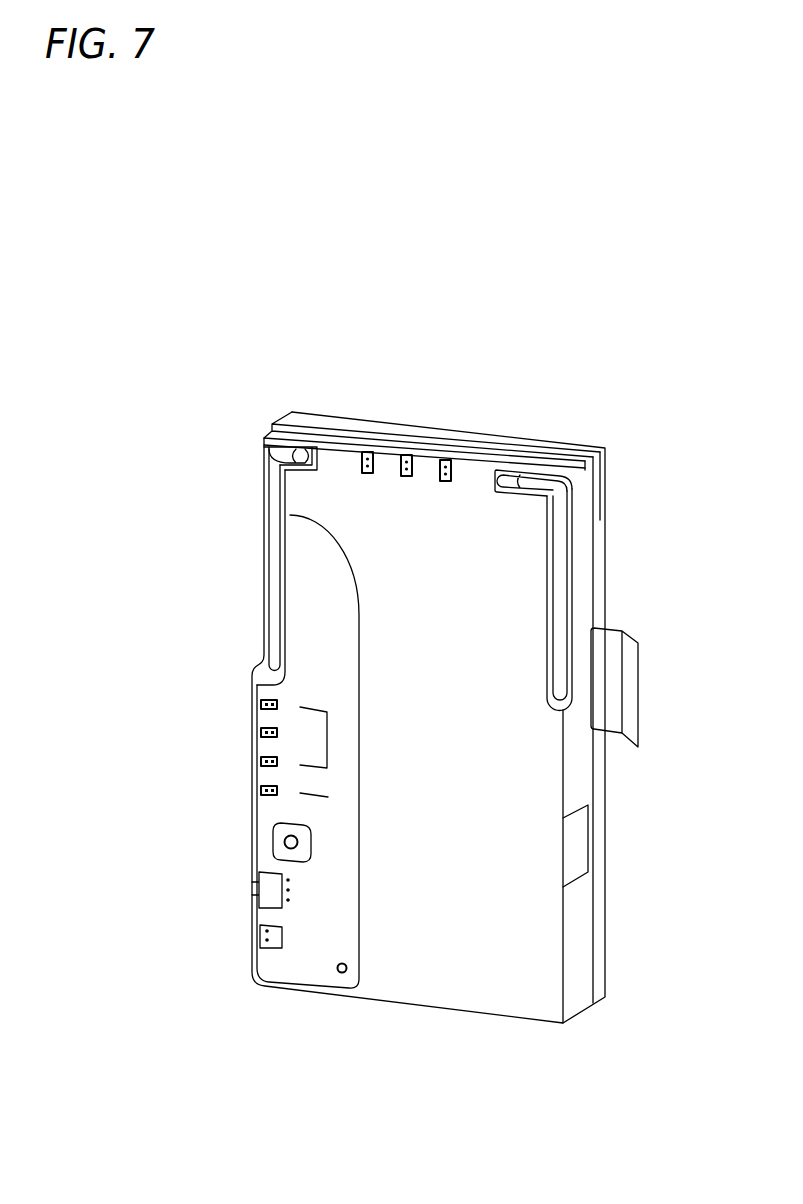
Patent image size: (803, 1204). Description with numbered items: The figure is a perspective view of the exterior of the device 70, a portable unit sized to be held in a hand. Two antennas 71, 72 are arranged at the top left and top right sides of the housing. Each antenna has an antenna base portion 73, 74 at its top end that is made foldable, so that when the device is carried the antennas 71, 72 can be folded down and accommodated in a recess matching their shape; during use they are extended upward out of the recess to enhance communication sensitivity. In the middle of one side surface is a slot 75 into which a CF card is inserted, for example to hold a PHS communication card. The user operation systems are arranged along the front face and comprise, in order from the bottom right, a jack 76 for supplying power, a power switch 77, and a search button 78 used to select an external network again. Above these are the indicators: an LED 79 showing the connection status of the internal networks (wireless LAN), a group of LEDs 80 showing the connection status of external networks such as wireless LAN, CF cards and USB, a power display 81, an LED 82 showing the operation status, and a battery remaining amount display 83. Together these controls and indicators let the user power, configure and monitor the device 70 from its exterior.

The device 70 is at (651, 429).
The antenna 71 is at (277, 497).
The antenna 72 is at (556, 607).
The antenna base portion 73 is at (277, 463).
The antenna base portion 74 is at (556, 498).
The slot 75 is at (632, 680).
The jack 76 is at (254, 935).
The power switch 77 is at (254, 887).
The search button 78 is at (285, 842).
The light emitting diode (LED) 79 is at (259, 788).
The LEDs 80 is at (242, 695).
The power display 81 is at (368, 450).
The LED 82 is at (407, 454).
The battery remaining amount display 83 is at (445, 459).